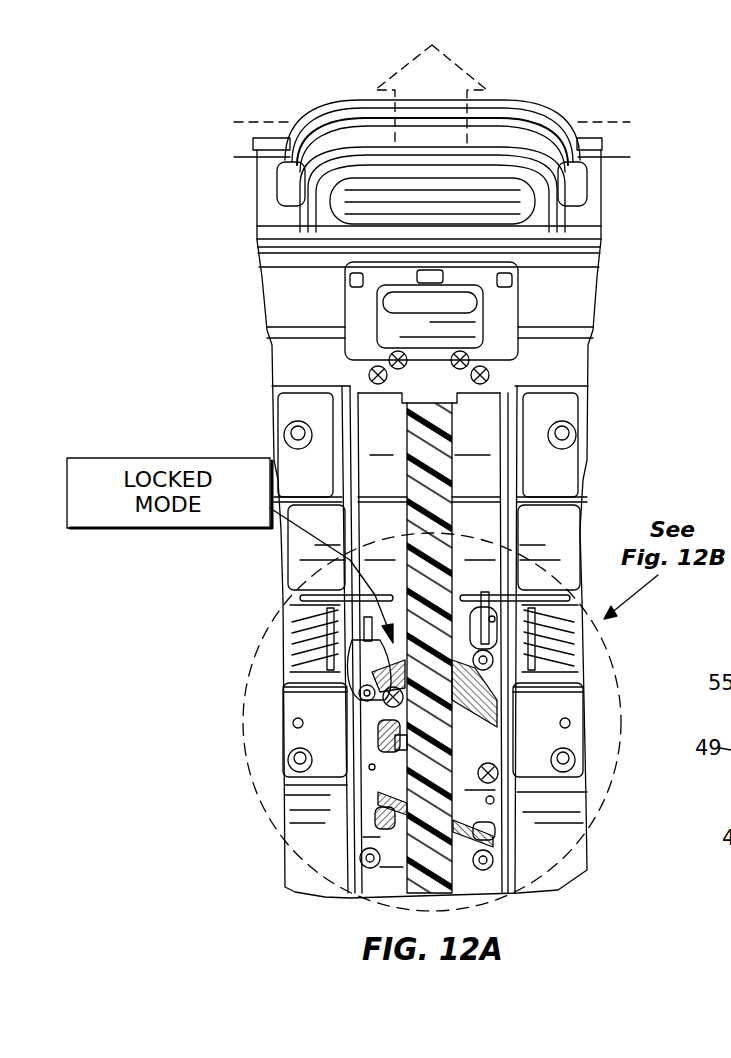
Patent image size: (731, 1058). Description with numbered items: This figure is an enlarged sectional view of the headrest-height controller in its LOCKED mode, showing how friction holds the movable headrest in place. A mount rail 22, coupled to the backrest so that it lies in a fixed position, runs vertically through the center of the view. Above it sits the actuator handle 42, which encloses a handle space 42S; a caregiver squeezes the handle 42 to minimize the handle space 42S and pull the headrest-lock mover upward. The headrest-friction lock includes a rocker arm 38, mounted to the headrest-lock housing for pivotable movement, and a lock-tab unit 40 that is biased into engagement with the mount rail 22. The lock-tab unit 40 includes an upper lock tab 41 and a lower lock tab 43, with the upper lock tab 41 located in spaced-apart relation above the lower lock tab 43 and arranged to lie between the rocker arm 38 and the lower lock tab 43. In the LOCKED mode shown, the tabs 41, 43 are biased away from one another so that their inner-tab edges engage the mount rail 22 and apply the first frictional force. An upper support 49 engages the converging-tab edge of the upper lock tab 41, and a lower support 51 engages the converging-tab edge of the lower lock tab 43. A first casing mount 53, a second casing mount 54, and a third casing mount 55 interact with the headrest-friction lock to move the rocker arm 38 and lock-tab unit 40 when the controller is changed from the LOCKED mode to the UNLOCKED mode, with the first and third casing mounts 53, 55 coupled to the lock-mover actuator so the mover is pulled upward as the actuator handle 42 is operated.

The mount rail 22 is at (425, 866).
The rocker arm 38 is at (292, 614).
The lock-tab unit 40 is at (337, 786).
The upper lock tab 41 is at (500, 736).
The actuator handle 42 is at (532, 163).
The handle space 42S is at (516, 124).
The lower lock tab 43 is at (500, 830).
The upper support 49 is at (372, 728).
The lower support 51 is at (372, 826).
The first casing mount 53 is at (506, 870).
The second casing mount 54 is at (500, 651).
The third casing mount 55 is at (368, 697).